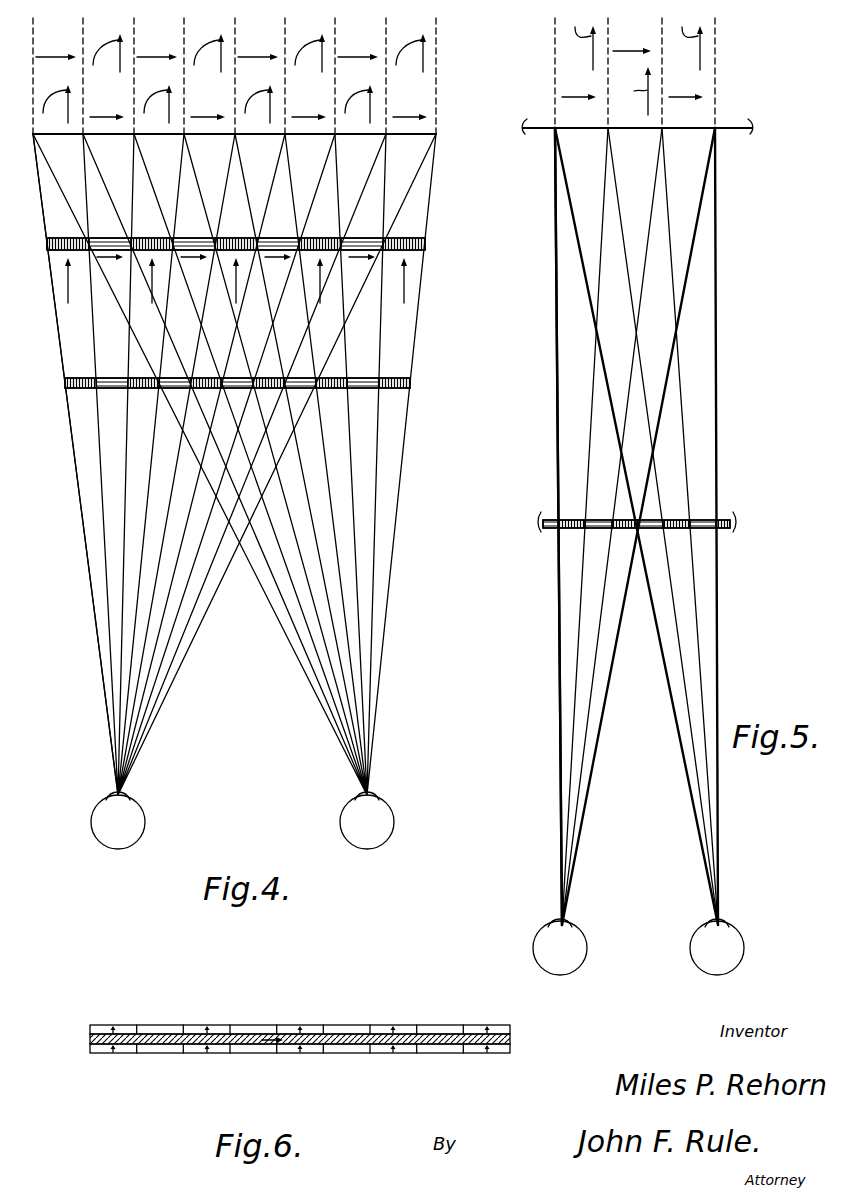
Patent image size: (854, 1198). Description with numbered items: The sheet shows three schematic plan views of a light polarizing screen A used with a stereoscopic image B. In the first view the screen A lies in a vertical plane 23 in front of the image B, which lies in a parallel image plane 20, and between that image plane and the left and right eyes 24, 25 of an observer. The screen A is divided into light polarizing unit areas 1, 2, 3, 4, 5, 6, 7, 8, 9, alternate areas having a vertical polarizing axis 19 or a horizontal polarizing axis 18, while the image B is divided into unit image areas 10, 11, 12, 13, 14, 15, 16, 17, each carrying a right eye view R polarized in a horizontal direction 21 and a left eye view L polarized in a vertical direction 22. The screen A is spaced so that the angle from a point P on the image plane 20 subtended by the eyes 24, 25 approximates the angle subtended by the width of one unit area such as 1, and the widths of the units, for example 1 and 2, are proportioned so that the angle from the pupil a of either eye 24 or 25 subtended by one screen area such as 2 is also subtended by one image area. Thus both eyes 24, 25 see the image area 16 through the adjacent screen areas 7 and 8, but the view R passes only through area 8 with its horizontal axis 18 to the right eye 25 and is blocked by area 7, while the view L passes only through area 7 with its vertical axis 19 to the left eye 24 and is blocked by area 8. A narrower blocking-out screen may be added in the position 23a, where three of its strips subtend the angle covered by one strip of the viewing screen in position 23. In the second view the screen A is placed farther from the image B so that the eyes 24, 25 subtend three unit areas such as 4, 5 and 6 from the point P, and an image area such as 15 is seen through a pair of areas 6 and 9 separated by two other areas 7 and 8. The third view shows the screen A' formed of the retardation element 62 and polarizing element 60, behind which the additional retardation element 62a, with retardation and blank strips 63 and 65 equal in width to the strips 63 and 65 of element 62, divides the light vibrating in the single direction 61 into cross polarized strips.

In FIG. 4, the light polarizing unit area 1 is at (63, 238).
In FIG. 4, the light polarizing unit area 2 is at (107, 238).
In FIG. 4, the lens element 3 is at (147, 238).
In FIG. 4, the light polarizing unit area 4 is at (191, 238).
In FIG. 5, the light polarizing unit area 4 is at (572, 520).
In FIG. 4, the light polarizing unit area 5 is at (231, 238).
In FIG. 5, the light polarizing unit area 5 is at (600, 520).
In FIG. 4, the light polarizing unit area 6 is at (275, 238).
In FIG. 5, the light polarizing unit area 6 is at (626, 520).
In FIG. 4, the light polarizing unit area 7 is at (315, 238).
In FIG. 5, the light polarizing unit area 7 is at (652, 520).
In FIG. 4, the light polarizing unit area 8 is at (359, 238).
In FIG. 5, the light polarizing unit area 8 is at (678, 520).
In FIG. 4, the light polarizing unit area 9 is at (399, 238).
In FIG. 5, the light polarizing unit area 9 is at (704, 520).
In FIG. 4, the picture strip 10 is at (63, 135).
In FIG. 4, the picture strip 11 is at (114, 135).
In FIG. 4, the picture strip 12 is at (164, 135).
In FIG. 4, the picture strip 13 is at (215, 135).
In FIG. 5, the picture strip 13 is at (586, 130).
In FIG. 4, the picture strip 14 is at (265, 135).
In FIG. 5, the picture strip 14 is at (639, 130).
In FIG. 4, the unit image area 15 is at (316, 135).
In FIG. 5, the unit image area 15 is at (689, 130).
In FIG. 4, the unit image area 16 is at (365, 135).
In FIG. 4, the picture strip 17 is at (417, 135).
In FIG. 4, the horizontal polarizing axis 18 is at (108, 261).
In FIG. 4, the vertical polarizing axis 19 is at (68, 290).
In FIG. 4, the image plane 20 is at (266, 104).
In FIG. 5, the image plane 20 is at (659, 95).
In FIG. 4, the horizontal direction 21 is at (60, 55).
In FIG. 5, the horizontal direction 21 is at (575, 100).
In FIG. 4, the vertical direction 22 is at (231, 83).
In FIG. 5, the vertical direction 22 is at (633, 63).
In FIG. 4, the vertical plane 23 is at (270, 232).
In FIG. 5, the vertical plane 23 is at (637, 538).
In FIG. 4, the position of blocking-out screen 23a is at (411, 385).
In FIG. 4, the left eye 24 is at (146, 822).
In FIG. 5, the left eye 24 is at (588, 948).
In FIG. 4, the right eye 25 is at (395, 822).
In FIG. 5, the right eye 25 is at (745, 948).
In FIG. 4, the screen A is at (270, 221).
In FIG. 5, the screen A is at (621, 538).
In FIG. 4, the image B is at (441, 130).
In FIG. 5, the image B is at (725, 123).
In FIG. 4, the point P is at (31, 140).
In FIG. 5, the point P is at (552, 137).
In FIG. 4, the pupil a is at (128, 795).
In FIG. 5, the pupil a is at (570, 922).
In FIG. 6, the polarizing element 60 is at (330, 995).
In FIG. 6, the arrow 61 is at (268, 1033).
In FIG. 6, the retardation element 62 is at (513, 1029).
In FIG. 6, the additional retardation element 62a is at (513, 1048).
In FIG. 6, the retardation strips 63 is at (121, 1029).
In FIG. 6, the blank strips 65 is at (162, 1029).
In FIG. 6, the screen A' is at (302, 1024).